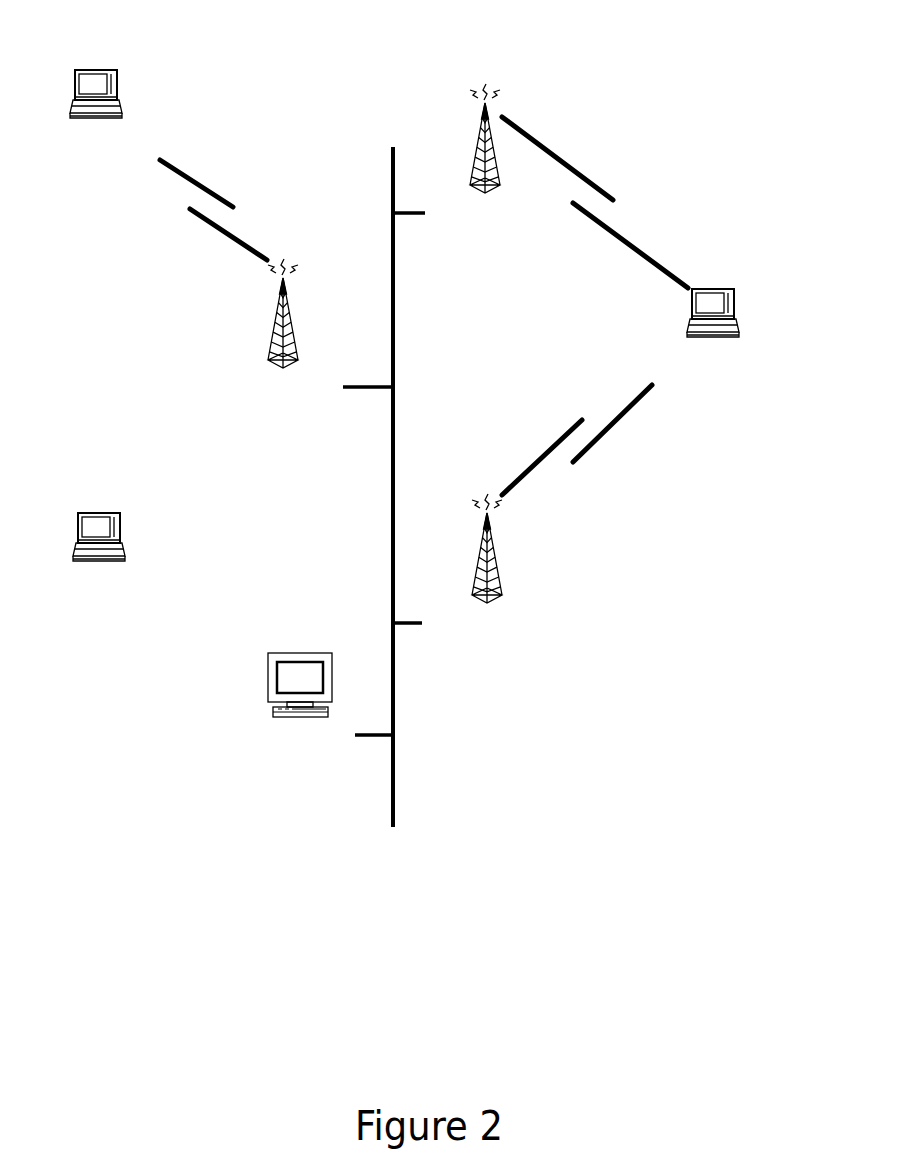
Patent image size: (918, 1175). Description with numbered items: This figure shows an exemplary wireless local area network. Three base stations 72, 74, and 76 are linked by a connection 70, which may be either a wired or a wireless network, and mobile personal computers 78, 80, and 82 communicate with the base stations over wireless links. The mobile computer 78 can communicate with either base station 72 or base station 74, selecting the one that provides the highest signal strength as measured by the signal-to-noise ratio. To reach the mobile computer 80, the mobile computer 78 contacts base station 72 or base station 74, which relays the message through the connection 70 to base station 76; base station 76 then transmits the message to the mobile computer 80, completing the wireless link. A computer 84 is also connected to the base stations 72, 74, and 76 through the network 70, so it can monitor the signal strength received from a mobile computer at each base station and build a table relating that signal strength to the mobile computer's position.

The connection 70 is at (388, 168).
The base station 72 is at (470, 113).
The base station 74 is at (473, 558).
The base station 76 is at (262, 323).
The mobile personal computer 78 is at (742, 288).
The mobile personal computer 80 is at (117, 73).
The mobile personal computer 82 is at (128, 513).
The computer 84 is at (262, 662).